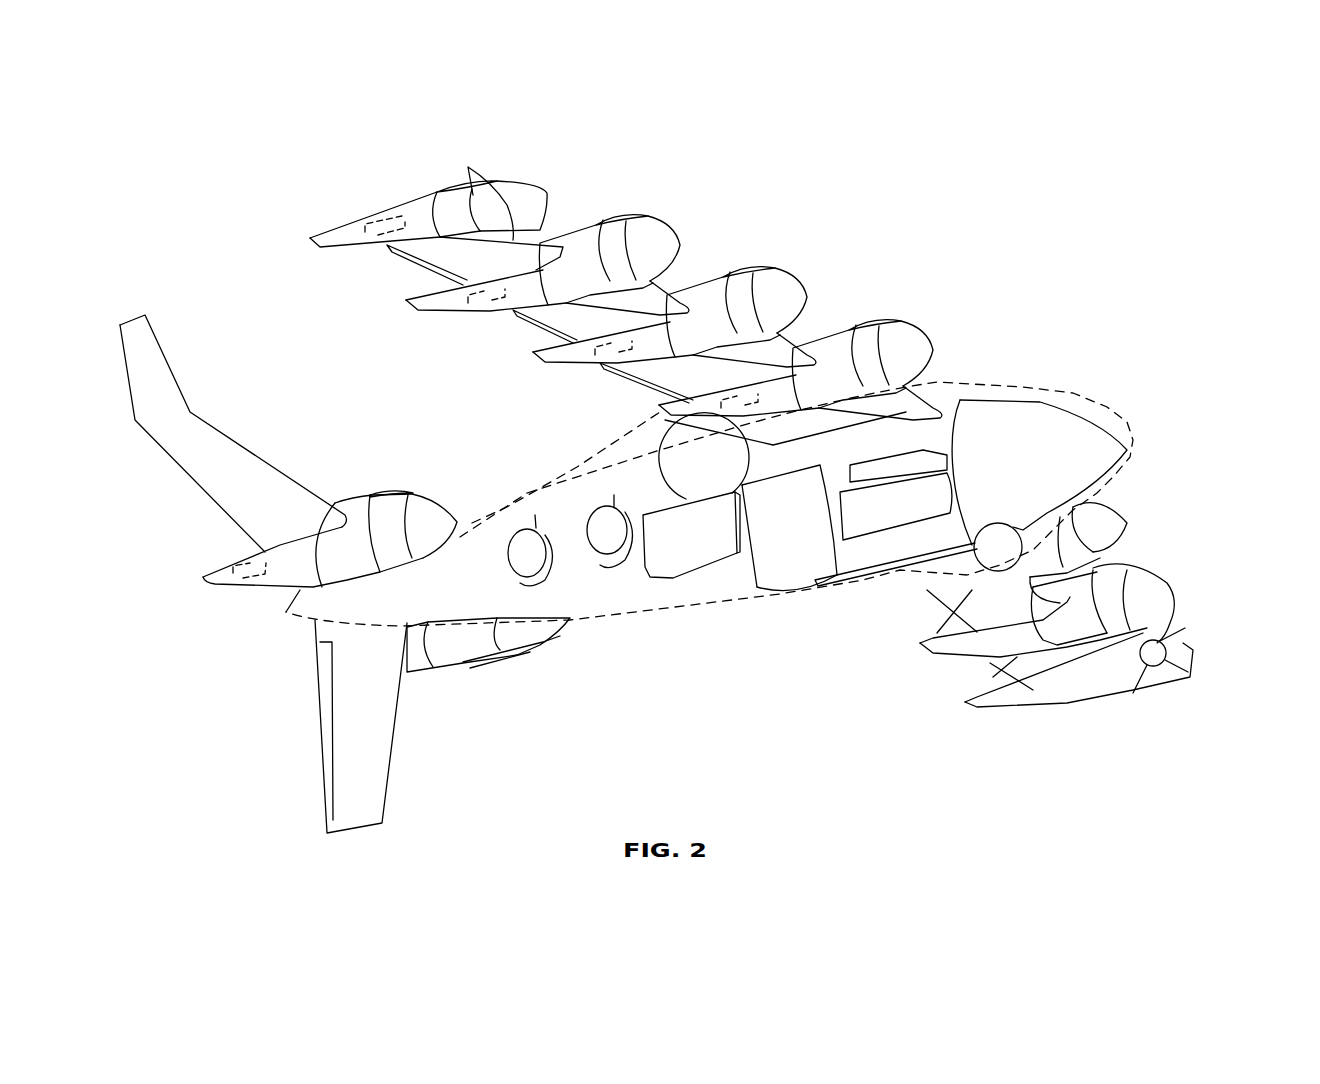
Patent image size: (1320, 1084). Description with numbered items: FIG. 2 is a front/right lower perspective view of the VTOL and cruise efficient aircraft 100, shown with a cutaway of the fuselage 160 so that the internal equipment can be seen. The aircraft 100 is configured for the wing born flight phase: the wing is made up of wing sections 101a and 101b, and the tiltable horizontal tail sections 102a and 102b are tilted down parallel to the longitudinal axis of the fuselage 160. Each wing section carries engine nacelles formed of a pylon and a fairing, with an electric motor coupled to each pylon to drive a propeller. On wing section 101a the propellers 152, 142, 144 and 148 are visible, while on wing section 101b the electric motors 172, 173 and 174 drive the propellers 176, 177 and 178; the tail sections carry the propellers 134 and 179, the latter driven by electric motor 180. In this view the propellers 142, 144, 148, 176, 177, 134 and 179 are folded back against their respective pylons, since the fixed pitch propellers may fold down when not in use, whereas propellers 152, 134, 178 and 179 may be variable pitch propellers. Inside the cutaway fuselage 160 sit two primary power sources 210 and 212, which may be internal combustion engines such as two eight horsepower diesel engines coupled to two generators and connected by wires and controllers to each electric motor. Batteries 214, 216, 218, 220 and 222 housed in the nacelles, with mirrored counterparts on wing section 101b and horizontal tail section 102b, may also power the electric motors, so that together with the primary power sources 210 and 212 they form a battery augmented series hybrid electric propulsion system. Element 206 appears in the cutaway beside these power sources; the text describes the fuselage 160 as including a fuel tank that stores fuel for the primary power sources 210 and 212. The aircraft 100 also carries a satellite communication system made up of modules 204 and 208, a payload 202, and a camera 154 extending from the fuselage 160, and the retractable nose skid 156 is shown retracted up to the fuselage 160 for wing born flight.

The aircraft 100 is at (225, 281).
The wing section 101a is at (413, 174).
The wing section 101b is at (1129, 552).
The horizontal tail section 102a is at (223, 402).
The horizontal tail section 102b is at (537, 716).
The propeller 134 is at (410, 490).
The propeller 142 is at (633, 210).
The propeller 144 is at (752, 268).
The propeller 148 is at (887, 323).
The propeller 152 is at (547, 208).
The camera 154 is at (995, 543).
The retractable nose skid 156 is at (812, 587).
The fuselage 160 is at (1053, 393).
The electric motor 172 is at (1057, 520).
The electric motor 173 is at (1117, 587).
The electric motor 174 is at (1143, 680).
The propeller 176 is at (1062, 530).
The propeller 177 is at (1123, 643).
The propeller 178 is at (1160, 645).
The propeller 179 is at (517, 660).
The electric motor 180 is at (510, 627).
The payload 202 is at (1075, 432).
The satellite communication system module 204 is at (905, 530).
The drum section 206 is at (762, 573).
The satellite communication system module 208 is at (670, 570).
The primary power source 210 is at (595, 527).
The primary power source 212 is at (512, 547).
The battery 214 is at (385, 220).
The battery 216 is at (482, 280).
The battery 218 is at (600, 362).
The battery 220 is at (780, 377).
The battery 222 is at (273, 567).